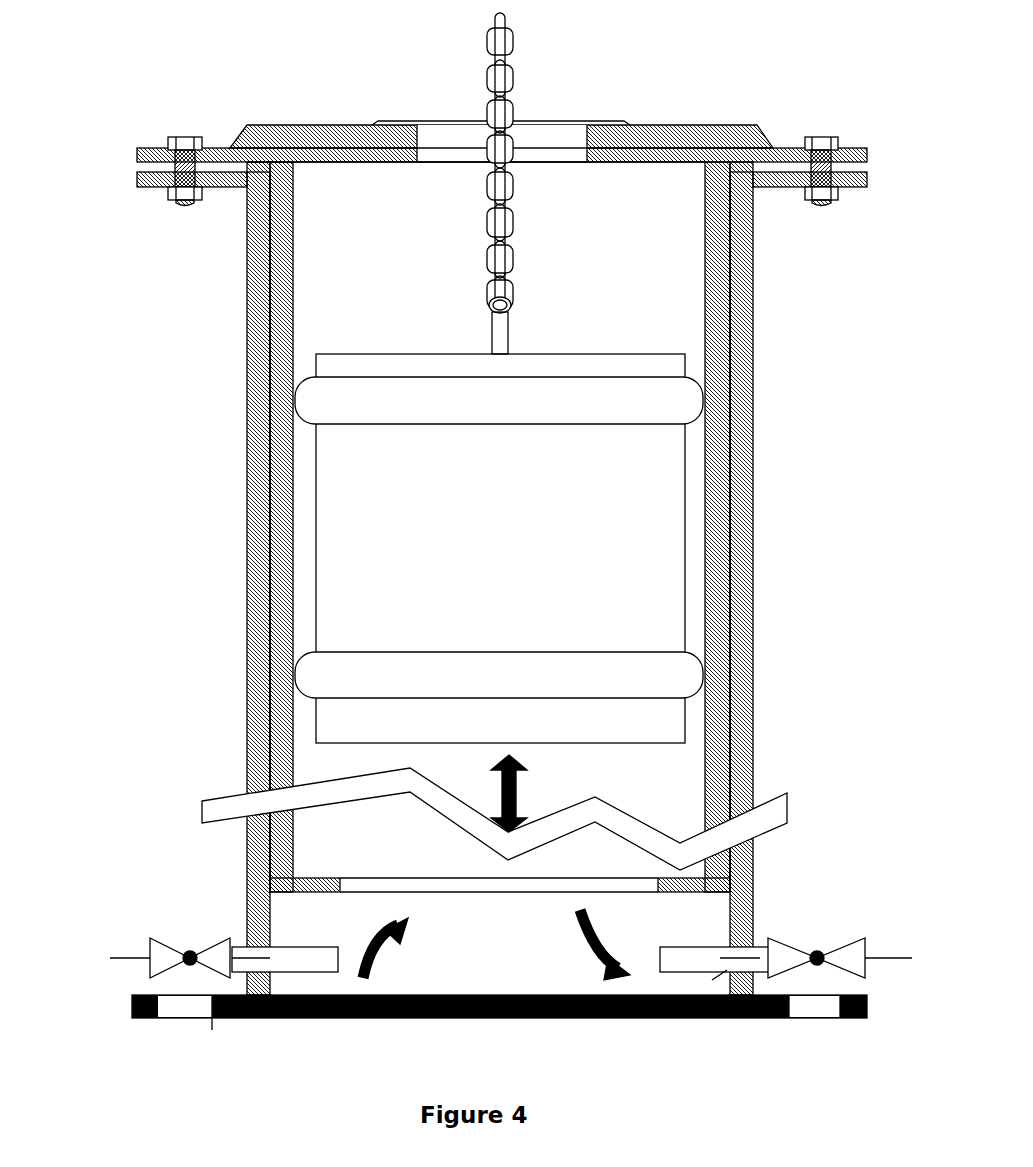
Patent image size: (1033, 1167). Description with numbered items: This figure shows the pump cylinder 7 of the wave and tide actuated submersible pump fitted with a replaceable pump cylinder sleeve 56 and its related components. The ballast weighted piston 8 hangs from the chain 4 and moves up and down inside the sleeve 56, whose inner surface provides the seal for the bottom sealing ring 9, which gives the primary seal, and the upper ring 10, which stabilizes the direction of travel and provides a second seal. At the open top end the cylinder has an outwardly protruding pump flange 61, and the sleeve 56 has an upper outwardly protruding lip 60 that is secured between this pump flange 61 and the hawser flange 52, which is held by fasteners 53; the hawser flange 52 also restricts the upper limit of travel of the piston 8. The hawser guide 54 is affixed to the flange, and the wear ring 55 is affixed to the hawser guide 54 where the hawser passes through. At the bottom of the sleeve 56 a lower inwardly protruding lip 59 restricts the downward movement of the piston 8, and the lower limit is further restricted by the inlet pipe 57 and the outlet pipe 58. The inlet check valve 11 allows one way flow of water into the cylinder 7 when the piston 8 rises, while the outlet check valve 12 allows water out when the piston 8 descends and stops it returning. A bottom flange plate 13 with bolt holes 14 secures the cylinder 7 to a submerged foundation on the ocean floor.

The chain 4 is at (485, 94).
The pump cylinder 7 is at (247, 267).
The ballast weighted piston 8 is at (316, 522).
The sealing ring 9 is at (297, 660).
The upper ring 10 is at (703, 380).
The inlet check valve 11 is at (151, 940).
The outlet check valve 12 is at (798, 948).
The bottom flange plate 13 is at (132, 1012).
The bolt holes 14 is at (827, 984).
The hawser flange 52 is at (137, 153).
The fasteners 53 is at (172, 139).
The hawser guide 54 is at (247, 126).
The wear ring 55 is at (375, 125).
The replaceable pump cylinder sleeve 56 is at (270, 543).
The inlet pipe 57 is at (305, 947).
The outlet pipe 58 is at (755, 946).
The lower inwardly protruding lip 59 is at (736, 900).
The upper outwardly protruding lip 60 is at (760, 168).
The pump flange 61 is at (137, 178).